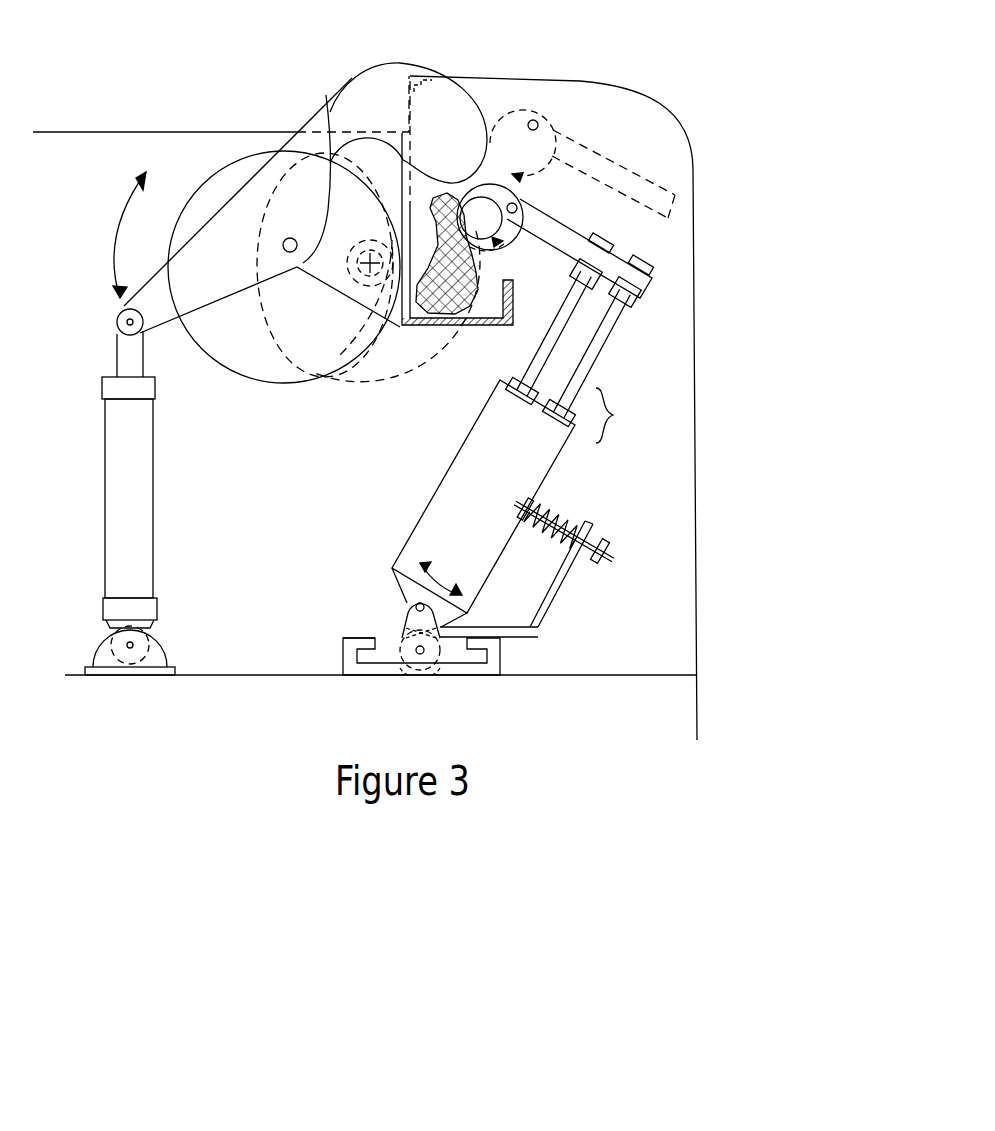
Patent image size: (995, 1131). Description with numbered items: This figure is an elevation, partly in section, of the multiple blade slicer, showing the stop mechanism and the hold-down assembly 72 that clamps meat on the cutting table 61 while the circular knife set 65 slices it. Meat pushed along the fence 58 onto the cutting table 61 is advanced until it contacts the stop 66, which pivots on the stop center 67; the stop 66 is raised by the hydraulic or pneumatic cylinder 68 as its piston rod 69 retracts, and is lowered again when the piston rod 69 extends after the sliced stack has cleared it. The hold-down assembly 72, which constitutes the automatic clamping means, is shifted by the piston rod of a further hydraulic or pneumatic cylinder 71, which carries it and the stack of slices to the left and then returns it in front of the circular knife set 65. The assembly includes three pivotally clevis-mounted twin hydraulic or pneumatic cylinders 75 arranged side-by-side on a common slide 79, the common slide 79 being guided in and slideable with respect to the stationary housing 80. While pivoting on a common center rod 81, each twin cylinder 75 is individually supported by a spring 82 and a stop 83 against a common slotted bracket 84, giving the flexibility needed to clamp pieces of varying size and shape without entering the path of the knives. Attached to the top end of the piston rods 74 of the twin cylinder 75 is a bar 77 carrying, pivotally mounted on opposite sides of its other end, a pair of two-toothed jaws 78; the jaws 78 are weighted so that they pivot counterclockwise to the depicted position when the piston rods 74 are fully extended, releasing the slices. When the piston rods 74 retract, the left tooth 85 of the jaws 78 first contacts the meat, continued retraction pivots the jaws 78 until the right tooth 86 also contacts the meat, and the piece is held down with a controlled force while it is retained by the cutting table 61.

The fence 58 is at (326, 95).
The cutting table 61 is at (415, 323).
The circular knife set 65 is at (457, 197).
The stop 66 is at (372, 63).
The stop center 67 is at (284, 248).
The hydraulic or pneumatic cylinder 68 is at (104, 458).
The piston rod 69 is at (118, 363).
The hydraulic or pneumatic cylinder 71 is at (423, 675).
The hold-down assembly 72 is at (613, 416).
The piston rods 74 is at (593, 367).
The twin hydraulic or pneumatic cylinder 75 is at (553, 458).
The bar 77 is at (657, 293).
The two-toothed jaws 78 is at (479, 185).
The common slide 79 is at (373, 637).
The stationary housing 80 is at (343, 658).
The common center rod 81 is at (405, 603).
The spring 82 is at (560, 512).
The stop 83 is at (414, 408).
The common slotted bracket 84 is at (553, 606).
The left tooth 85 is at (460, 193).
The right tooth 86 is at (472, 248).